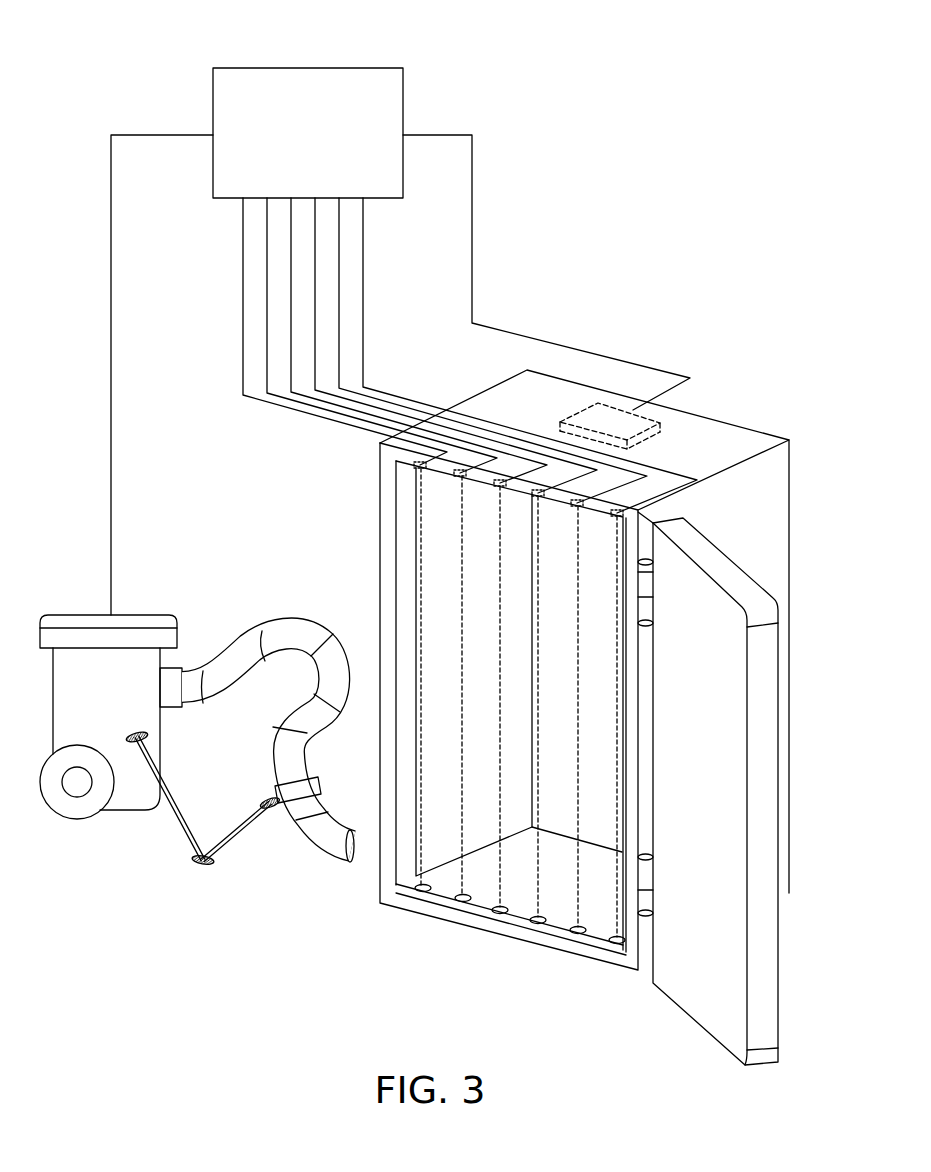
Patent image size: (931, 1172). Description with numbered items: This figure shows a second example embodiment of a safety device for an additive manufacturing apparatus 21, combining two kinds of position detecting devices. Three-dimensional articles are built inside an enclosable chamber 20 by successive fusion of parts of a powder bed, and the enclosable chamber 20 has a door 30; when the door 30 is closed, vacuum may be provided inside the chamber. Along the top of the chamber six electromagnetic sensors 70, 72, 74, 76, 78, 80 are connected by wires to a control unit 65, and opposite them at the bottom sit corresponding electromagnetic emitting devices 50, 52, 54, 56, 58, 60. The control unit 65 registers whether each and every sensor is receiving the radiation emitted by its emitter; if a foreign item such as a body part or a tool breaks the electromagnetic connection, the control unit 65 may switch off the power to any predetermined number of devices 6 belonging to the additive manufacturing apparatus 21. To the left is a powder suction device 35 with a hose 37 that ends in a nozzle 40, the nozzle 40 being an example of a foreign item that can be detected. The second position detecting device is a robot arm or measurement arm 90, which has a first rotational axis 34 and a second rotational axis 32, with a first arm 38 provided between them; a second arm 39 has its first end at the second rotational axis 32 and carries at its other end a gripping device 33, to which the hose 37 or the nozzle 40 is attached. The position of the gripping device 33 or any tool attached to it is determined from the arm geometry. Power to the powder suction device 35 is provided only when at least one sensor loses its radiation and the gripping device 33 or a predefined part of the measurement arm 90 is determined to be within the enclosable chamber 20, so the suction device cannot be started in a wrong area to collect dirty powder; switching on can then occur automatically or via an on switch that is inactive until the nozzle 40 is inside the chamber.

The control unit 65 is at (307, 92).
The additive manufacturing apparatus 21 is at (700, 317).
The enclosable chamber 20 is at (727, 442).
The devices 6 is at (662, 442).
The door 30 is at (722, 1013).
The electromagnetic sensor 70 is at (420, 465).
The electromagnetic sensor 72 is at (460, 473).
The electromagnetic sensor 74 is at (500, 483).
The electromagnetic sensor 76 is at (538, 493).
The electromagnetic sensor 78 is at (577, 503).
The electromagnetic sensor 80 is at (617, 513).
The electromagnetic emitting device 50 is at (403, 889).
The electromagnetic emitting device 52 is at (434, 907).
The electromagnetic emitting device 54 is at (484, 917).
The electromagnetic emitting device 56 is at (525, 925).
The electromagnetic emitting device 58 is at (560, 933).
The electromagnetic emitting device 60 is at (598, 950).
The powder suction device 35 is at (133, 797).
The hose 37 is at (230, 655).
The first rotational axis 34 is at (162, 738).
The first arm 38 is at (180, 800).
The second arm 39 is at (240, 833).
The gripping device 33 is at (272, 812).
The second rotational axis 32 is at (200, 866).
The nozzle 40 is at (352, 846).
The measurement arm 90 is at (113, 900).